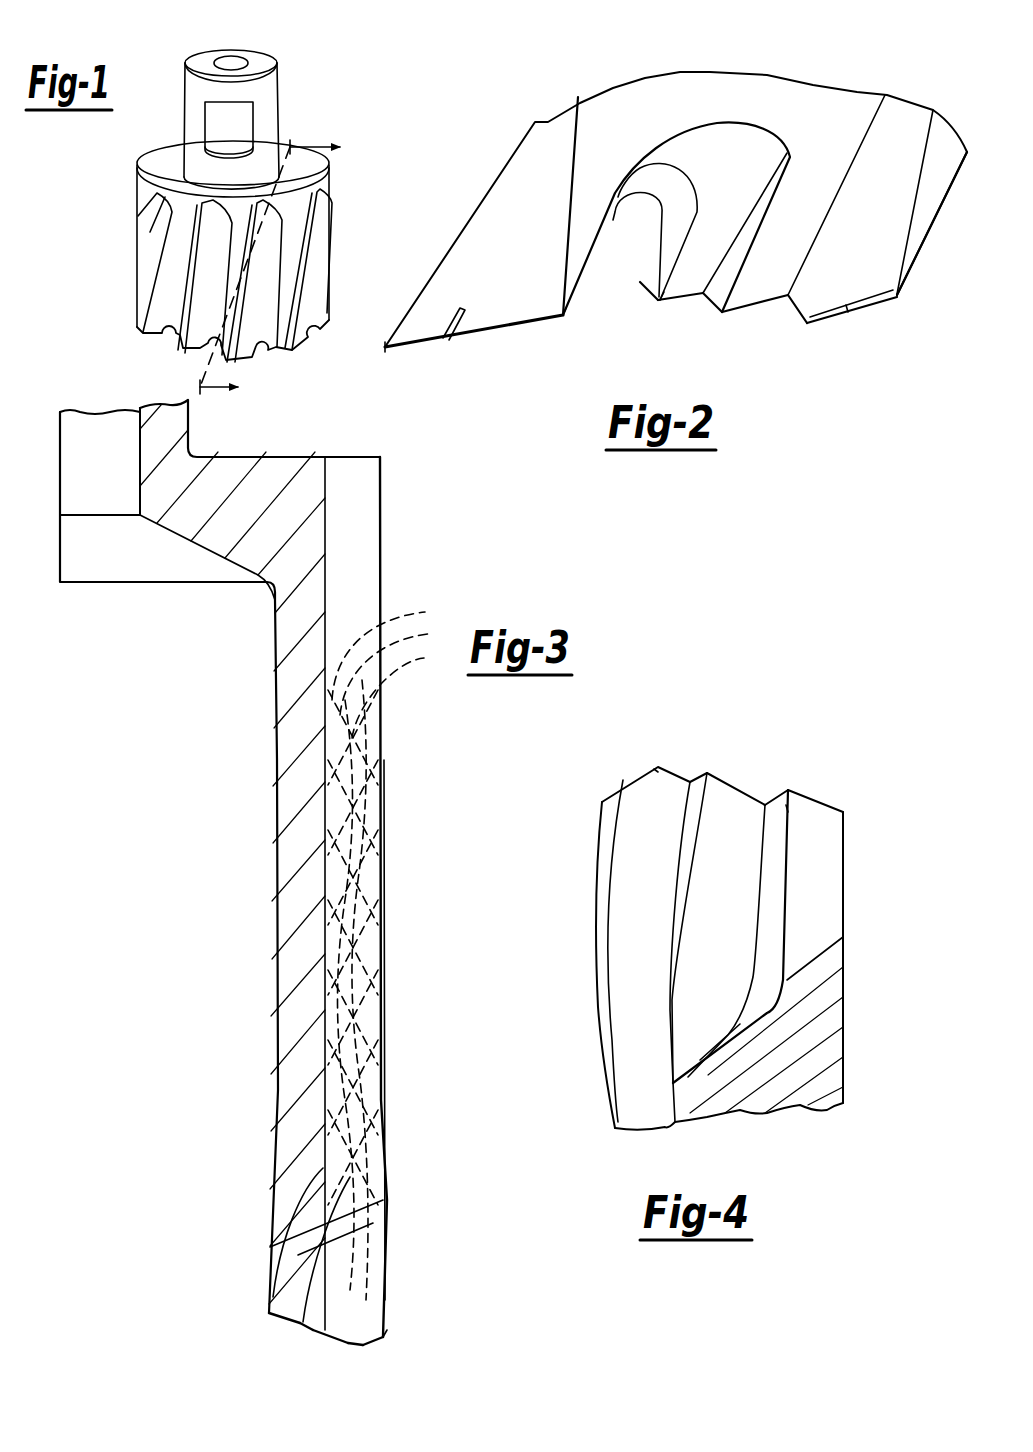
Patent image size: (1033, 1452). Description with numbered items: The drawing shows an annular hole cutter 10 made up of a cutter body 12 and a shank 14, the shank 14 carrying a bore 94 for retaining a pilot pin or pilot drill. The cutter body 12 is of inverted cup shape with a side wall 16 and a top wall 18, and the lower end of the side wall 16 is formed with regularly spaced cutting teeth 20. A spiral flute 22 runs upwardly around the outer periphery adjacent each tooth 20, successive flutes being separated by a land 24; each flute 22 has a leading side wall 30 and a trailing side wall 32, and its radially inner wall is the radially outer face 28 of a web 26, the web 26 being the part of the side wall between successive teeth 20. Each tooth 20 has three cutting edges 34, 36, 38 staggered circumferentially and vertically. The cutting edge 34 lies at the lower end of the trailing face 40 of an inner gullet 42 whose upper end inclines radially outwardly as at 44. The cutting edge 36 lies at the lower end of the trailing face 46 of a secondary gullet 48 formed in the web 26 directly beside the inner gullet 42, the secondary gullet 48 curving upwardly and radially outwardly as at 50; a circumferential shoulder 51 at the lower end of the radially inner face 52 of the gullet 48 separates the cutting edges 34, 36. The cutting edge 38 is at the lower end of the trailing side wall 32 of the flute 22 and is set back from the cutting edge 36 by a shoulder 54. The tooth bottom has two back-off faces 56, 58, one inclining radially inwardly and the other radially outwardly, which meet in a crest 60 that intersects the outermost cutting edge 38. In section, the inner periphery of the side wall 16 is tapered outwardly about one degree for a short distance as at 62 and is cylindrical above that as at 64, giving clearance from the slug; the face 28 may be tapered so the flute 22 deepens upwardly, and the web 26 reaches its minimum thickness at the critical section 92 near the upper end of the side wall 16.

In FIG. 1, the annular hole cutter 10 is at (295, 108).
In FIG. 1, the cutter body 12 is at (335, 258).
In FIG. 1, the shank 14 is at (285, 78).
In FIG. 3, the side wall 16 is at (285, 678).
In FIG. 1, the top wall 18 is at (288, 147).
In FIG. 1, the cutting teeth 20 is at (213, 340).
In FIG. 1, the spiral flute 22 is at (312, 222).
In FIG. 2, the spiral flute 22 is at (563, 142).
In FIG. 3, the spiral flute 22 is at (367, 1162).
In FIG. 4, the spiral flute 22 is at (619, 1062).
In FIG. 1, the land 24 is at (152, 283).
In FIG. 2, the land 24 is at (468, 215).
In FIG. 4, the land 24 is at (610, 845).
In FIG. 3, the web 26 is at (292, 962).
In FIG. 4, the web 26 is at (834, 1039).
In FIG. 2, the radially outer face of web 28 is at (814, 190).
In FIG. 3, the radially outer face of web 28 is at (327, 763).
In FIG. 4, the radially outer face of web 28 is at (687, 810).
In FIG. 2, the leading side wall 30 is at (447, 338).
In FIG. 2, the trailing side wall 32 is at (846, 275).
In FIG. 3, the trailing side wall 32 is at (367, 952).
In FIG. 4, the trailing side wall 32 is at (616, 941).
In FIG. 2, the cutting edge 34 is at (642, 282).
In FIG. 3, the cutting edge 34 is at (278, 1320).
In FIG. 4, the cutting edge 34 is at (809, 794).
In FIG. 2, the cutting edge 36 is at (706, 305).
In FIG. 3, the cutting edge 36 is at (313, 1330).
In FIG. 4, the cutting edge 36 is at (725, 770).
In FIG. 2, the cutting edge 38 is at (799, 320).
In FIG. 3, the cutting edge 38 is at (348, 1343).
In FIG. 4, the cutting edge 38 is at (667, 763).
In FIG. 2, the trailing face of inner gullet 40 is at (650, 267).
In FIG. 4, the trailing face of inner gullet 40 is at (845, 821).
In FIG. 2, the inner gullet 42 is at (588, 308).
In FIG. 3, the inner gullet 42 is at (288, 1247).
In FIG. 4, the inner gullet 42 is at (830, 893).
In FIG. 2, the inclined upper end of inner gullet 44 is at (657, 181).
In FIG. 4, the inclined upper end of inner gullet 44 is at (788, 974).
In FIG. 2, the trailing face of secondary gullet 46 is at (732, 256).
In FIG. 4, the trailing face of secondary gullet 46 is at (736, 794).
In FIG. 2, the secondary gullet 48 is at (725, 200).
In FIG. 3, the secondary gullet 48 is at (318, 1273).
In FIG. 2, the curved upper end of secondary gullet 50 is at (772, 162).
In FIG. 4, the curved upper end of secondary gullet 50 is at (747, 1033).
In FIG. 2, the shoulder 51 is at (680, 297).
In FIG. 4, the shoulder 51 is at (767, 786).
In FIG. 2, the radially inner face of gullet 52 is at (692, 250).
In FIG. 4, the radially inner face of gullet 52 is at (784, 859).
In FIG. 2, the shoulder 54 is at (751, 305).
In FIG. 4, the shoulder 54 is at (692, 779).
In FIG. 3, the back-off face 56 is at (300, 1323).
In FIG. 2, the back-off face 58 is at (846, 305).
In FIG. 3, the back-off face 58 is at (383, 1338).
In FIG. 2, the crest 60 is at (816, 312).
In FIG. 3, the crest 60 is at (363, 1345).
In FIG. 4, the crest 60 is at (658, 767).
In FIG. 3, the tapered portion of inner periphery 62 is at (277, 1097).
In FIG. 3, the cylindrical portion of inner periphery 64 is at (275, 803).
In FIG. 3, the critical section 92 is at (308, 597).
In FIG. 1, the bore 94 is at (236, 62).
In FIG. 3, the bore 94 is at (95, 423).